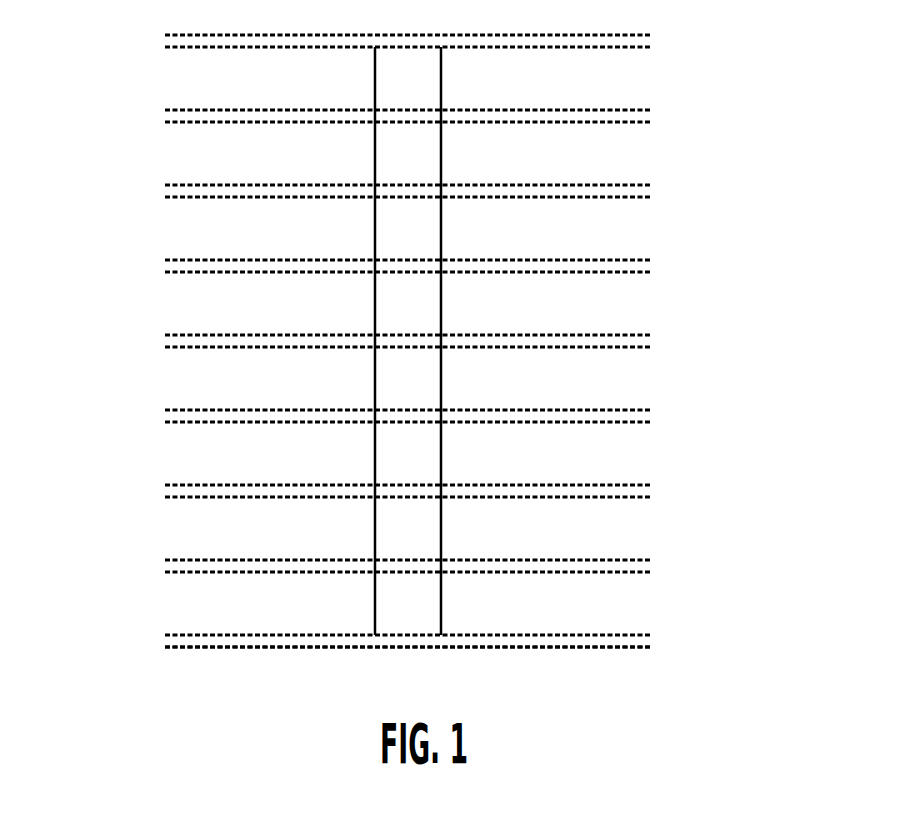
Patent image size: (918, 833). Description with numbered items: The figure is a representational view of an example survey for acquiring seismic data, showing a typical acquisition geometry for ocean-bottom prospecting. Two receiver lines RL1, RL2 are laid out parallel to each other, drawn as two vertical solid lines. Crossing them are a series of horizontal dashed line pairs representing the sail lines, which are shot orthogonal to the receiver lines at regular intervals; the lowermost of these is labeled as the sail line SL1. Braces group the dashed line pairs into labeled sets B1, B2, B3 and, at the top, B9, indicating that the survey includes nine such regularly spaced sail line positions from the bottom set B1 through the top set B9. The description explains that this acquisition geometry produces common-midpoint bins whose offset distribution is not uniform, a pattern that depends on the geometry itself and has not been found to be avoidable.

The ninth bit line pair block B9 is at (664, 20).
The third bit line pair block B3 is at (664, 511).
The second bit line pair block B2 is at (664, 587).
The first bit line pair block B1 is at (146, 659).
The sail line SL1 is at (672, 640).
The receiver line RL1 is at (375, 392).
The receiver line RL2 is at (441, 435).